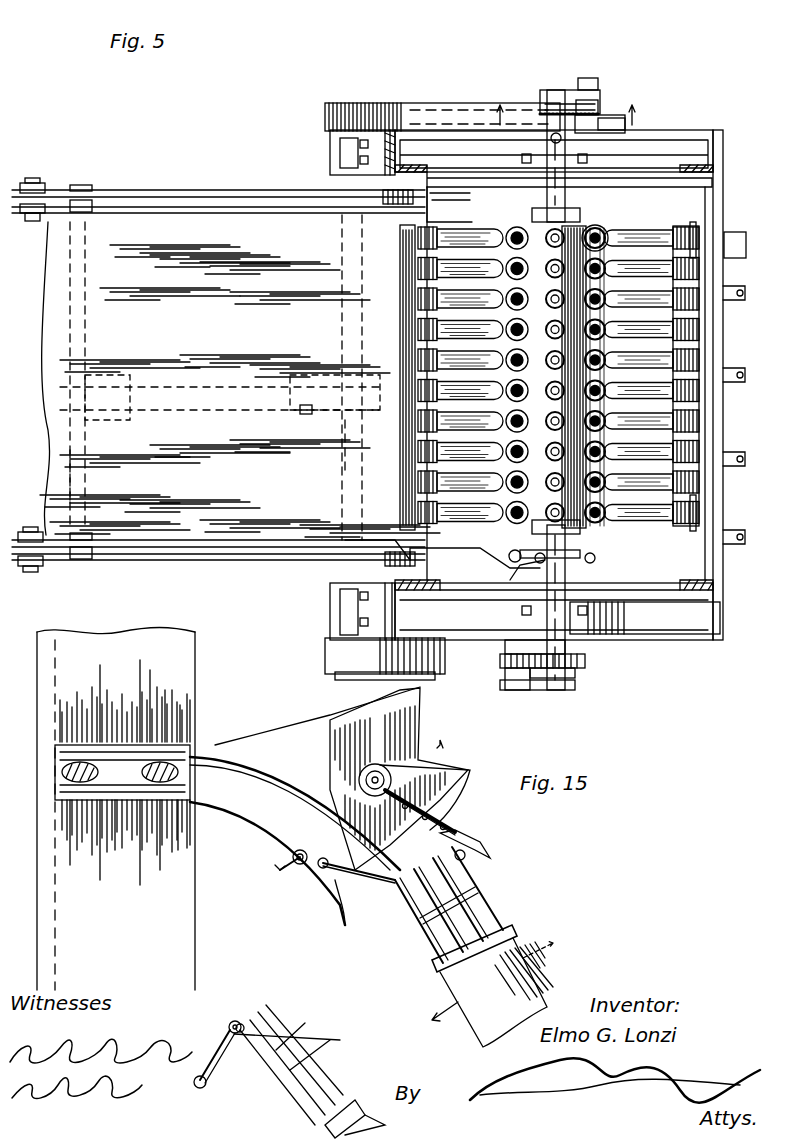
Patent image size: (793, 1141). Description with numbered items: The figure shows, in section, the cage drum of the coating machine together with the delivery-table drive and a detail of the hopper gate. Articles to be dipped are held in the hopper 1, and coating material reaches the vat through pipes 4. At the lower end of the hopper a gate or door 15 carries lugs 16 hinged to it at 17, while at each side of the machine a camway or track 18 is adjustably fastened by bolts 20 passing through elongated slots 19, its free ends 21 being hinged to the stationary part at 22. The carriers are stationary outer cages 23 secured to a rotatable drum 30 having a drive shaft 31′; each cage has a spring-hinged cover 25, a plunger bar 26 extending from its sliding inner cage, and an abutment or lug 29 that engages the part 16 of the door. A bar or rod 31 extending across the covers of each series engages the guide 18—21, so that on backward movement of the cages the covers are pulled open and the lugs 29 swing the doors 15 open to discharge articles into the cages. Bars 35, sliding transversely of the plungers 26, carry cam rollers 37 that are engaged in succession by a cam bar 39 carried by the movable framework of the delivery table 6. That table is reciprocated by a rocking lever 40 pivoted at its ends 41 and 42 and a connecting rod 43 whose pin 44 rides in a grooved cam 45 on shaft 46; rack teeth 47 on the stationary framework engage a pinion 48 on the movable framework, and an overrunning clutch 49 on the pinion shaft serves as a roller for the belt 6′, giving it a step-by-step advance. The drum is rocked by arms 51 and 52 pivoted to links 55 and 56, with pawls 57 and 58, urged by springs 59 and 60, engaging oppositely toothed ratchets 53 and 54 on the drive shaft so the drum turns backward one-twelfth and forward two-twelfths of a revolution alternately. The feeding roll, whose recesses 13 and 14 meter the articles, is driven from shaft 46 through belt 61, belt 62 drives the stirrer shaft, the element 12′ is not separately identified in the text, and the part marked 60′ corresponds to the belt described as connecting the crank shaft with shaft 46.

In FIG. 15, the hopper 1 is at (275, 740).
In FIG. 5, the pipes 4 is at (740, 382).
In FIG. 5, the delivery table 6 is at (135, 210).
In FIG. 5, the belt 6′ is at (50, 290).
In FIG. 15, the pivot 12′ is at (375, 764).
In FIG. 5, the arcuate recess 13 is at (500, 615).
In FIG. 5, the arcuate recess 14 is at (566, 118).
In FIG. 15, the gate or door 15 is at (495, 778).
In FIG. 15, the lug 16 is at (475, 845).
In FIG. 15, the hinge 17 is at (455, 830).
In FIG. 15, the camway or track 18 is at (250, 830).
In FIG. 15, the elongated slot 19 is at (80, 782).
In FIG. 15, the fastening bolt 20 is at (160, 782).
In FIG. 15, the free end of guide 21 is at (300, 870).
In FIG. 15, the hinge 22 is at (272, 871).
In FIG. 5, the stationary outer cage 23 is at (680, 232).
In FIG. 15, the stationary outer cage 23 is at (473, 905).
In FIG. 15, the cover 25 is at (380, 890).
In FIG. 5, the bar or plunger 26 is at (517, 227).
In FIG. 5, the abutment or lug 29 is at (693, 225).
In FIG. 15, the abutment or lug 29 is at (465, 858).
In FIG. 5, the rotatable drum 30 is at (605, 228).
In FIG. 5, the bar or rod 31 is at (699, 280).
In FIG. 15, the bar or rod 31 is at (320, 870).
In FIG. 5, the drive shaft 31′ is at (565, 196).
In FIG. 5, the bar 35 is at (560, 548).
In FIG. 5, the cam roller 37 is at (590, 562).
In FIG. 5, the cam bar 39 is at (515, 550).
In FIG. 5, the rocking lever 40 is at (92, 208).
In FIG. 5, the pivot 41 is at (82, 190).
In FIG. 5, the pivot 42 is at (85, 495).
In FIG. 5, the connecting rod 43 is at (142, 393).
In FIG. 5, the pin 44 is at (306, 414).
In FIG. 5, the grooved cam 45 is at (345, 390).
In FIG. 5, the shaft 46 is at (340, 470).
In FIG. 5, the rack teeth 47 is at (455, 197).
In FIG. 5, the pinion 48 is at (400, 206).
In FIG. 5, the overrunning clutch 49 is at (380, 548).
In FIG. 5, the arm 51 is at (565, 88).
In FIG. 5, the arm 52 is at (518, 690).
In FIG. 5, the ratchet 53 is at (598, 106).
In FIG. 5, the ratchet 54 is at (575, 673).
In FIG. 5, the link 55 is at (600, 74).
In FIG. 5, the link 56 is at (560, 690).
In FIG. 5, the pawl 57 is at (600, 120).
In FIG. 5, the pawl 58 is at (500, 662).
In FIG. 5, the spring 59 is at (615, 118).
In FIG. 5, the spring 60 is at (520, 640).
In FIG. 5, the rack 60′ is at (440, 112).
In FIG. 5, the belt 61 is at (435, 665).
In FIG. 5, the belt 62 is at (630, 618).